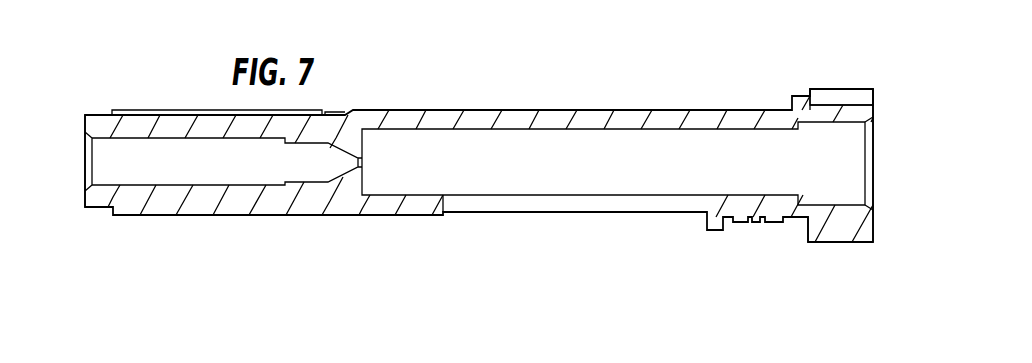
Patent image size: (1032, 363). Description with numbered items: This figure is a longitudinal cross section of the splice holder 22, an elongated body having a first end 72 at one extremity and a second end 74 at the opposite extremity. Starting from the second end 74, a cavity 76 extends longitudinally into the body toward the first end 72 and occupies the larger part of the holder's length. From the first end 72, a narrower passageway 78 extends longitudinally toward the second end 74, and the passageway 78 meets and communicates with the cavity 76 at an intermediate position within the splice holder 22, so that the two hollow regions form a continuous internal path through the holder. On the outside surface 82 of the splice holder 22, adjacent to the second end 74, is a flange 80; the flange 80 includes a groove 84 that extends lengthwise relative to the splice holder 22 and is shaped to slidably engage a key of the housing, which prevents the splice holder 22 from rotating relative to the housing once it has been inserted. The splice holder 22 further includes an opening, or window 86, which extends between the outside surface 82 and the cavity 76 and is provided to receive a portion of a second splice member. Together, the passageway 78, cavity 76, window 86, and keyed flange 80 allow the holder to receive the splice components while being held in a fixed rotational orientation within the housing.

The splice holder 22 is at (576, 260).
The first end 72 is at (84, 156).
The second end 74 is at (873, 140).
The cavity 76 is at (455, 174).
The passageway 78 is at (200, 174).
The flange 80 is at (808, 216).
The outside surface 82 is at (203, 214).
The groove 84 is at (832, 95).
The window 86 is at (467, 208).